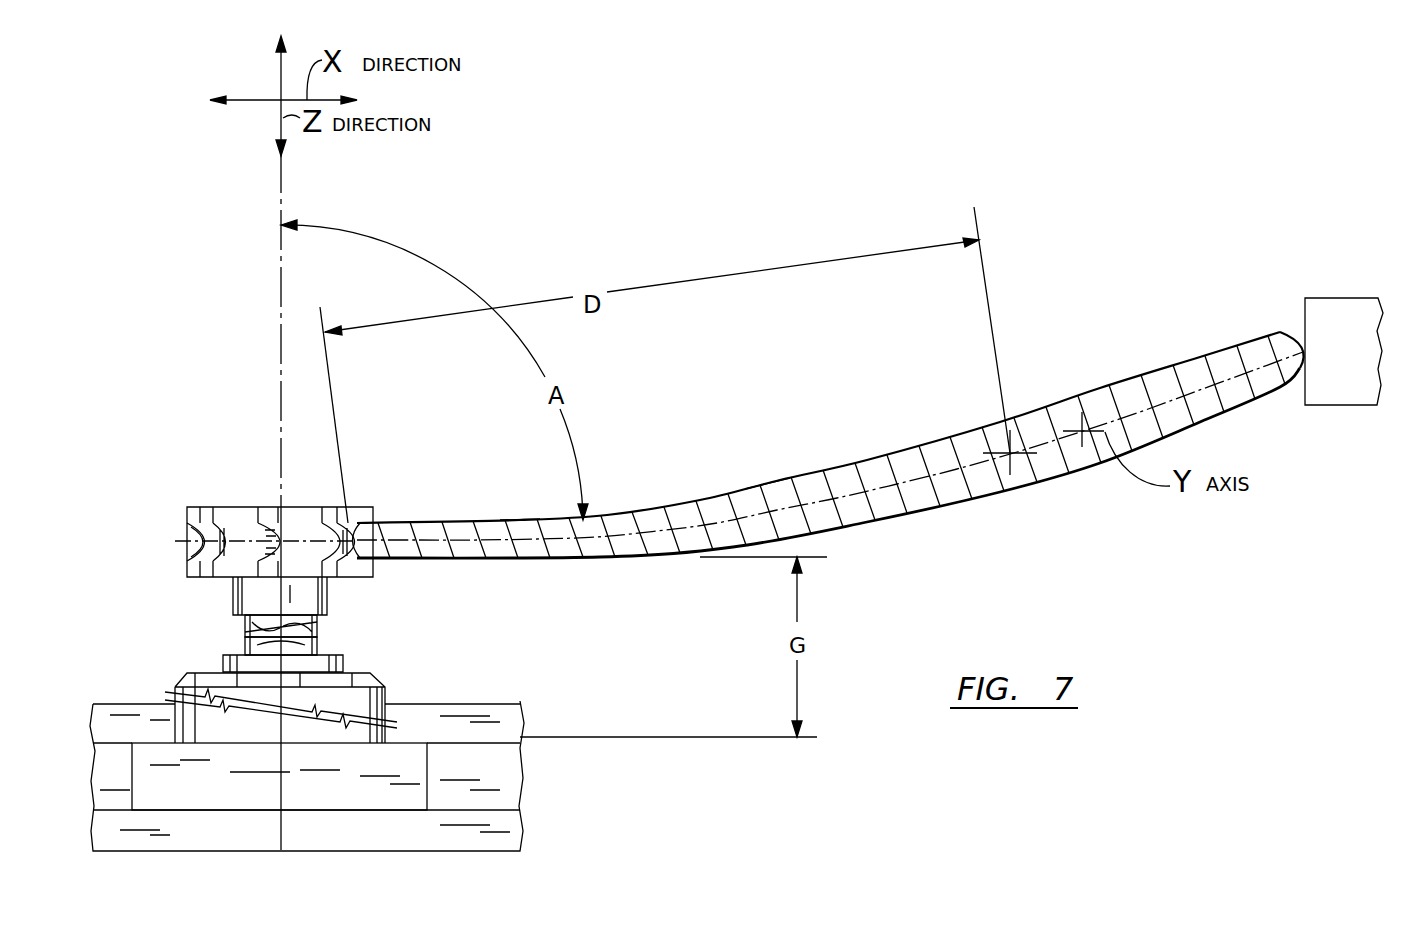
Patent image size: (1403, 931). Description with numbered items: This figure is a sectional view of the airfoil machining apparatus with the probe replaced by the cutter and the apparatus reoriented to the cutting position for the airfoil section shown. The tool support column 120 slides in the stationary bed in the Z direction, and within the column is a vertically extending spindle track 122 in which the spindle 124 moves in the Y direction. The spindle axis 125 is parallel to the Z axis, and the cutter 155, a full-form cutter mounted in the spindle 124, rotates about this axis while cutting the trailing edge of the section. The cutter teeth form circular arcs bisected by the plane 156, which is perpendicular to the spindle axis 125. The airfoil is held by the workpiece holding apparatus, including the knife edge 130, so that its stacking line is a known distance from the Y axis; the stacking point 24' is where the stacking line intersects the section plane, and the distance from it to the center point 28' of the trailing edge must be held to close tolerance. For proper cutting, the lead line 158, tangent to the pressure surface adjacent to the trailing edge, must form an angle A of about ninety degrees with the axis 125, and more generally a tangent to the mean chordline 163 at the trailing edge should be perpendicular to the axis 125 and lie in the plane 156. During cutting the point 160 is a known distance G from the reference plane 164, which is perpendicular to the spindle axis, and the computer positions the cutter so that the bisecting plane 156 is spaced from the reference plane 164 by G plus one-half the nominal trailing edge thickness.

The spindle axis 125 is at (281, 405).
The center point of the trailing edge 28' is at (739, 445).
The cutter 155 is at (207, 507).
The bisecting plane 156 is at (190, 548).
The lead line 158 is at (518, 523).
The point 160 is at (403, 548).
The mean chordline 163 is at (763, 513).
The stacking point 24' is at (1015, 480).
The knife edge 130 is at (1305, 318).
The spindle 124 is at (363, 672).
The tool support column 120 is at (468, 703).
The spindle track 122 is at (507, 790).
The reference plane 164 is at (718, 737).